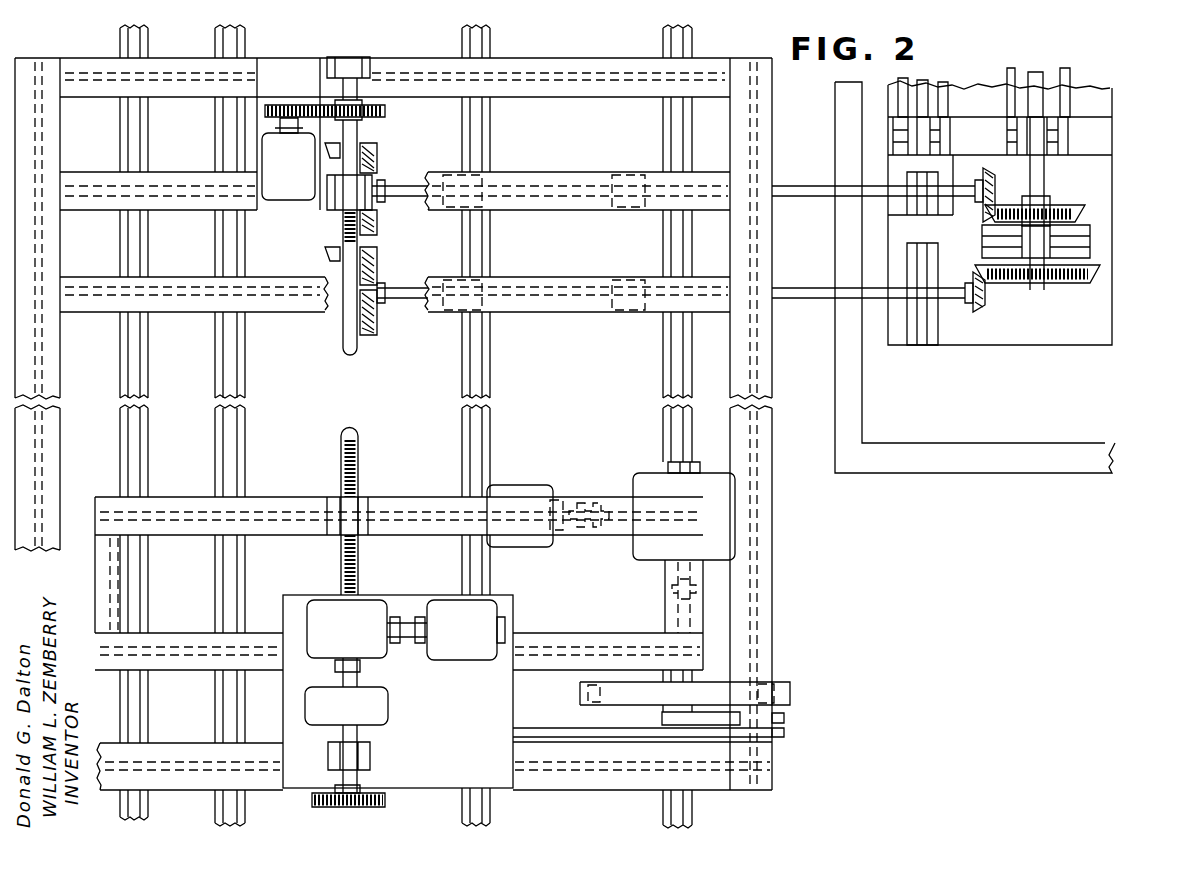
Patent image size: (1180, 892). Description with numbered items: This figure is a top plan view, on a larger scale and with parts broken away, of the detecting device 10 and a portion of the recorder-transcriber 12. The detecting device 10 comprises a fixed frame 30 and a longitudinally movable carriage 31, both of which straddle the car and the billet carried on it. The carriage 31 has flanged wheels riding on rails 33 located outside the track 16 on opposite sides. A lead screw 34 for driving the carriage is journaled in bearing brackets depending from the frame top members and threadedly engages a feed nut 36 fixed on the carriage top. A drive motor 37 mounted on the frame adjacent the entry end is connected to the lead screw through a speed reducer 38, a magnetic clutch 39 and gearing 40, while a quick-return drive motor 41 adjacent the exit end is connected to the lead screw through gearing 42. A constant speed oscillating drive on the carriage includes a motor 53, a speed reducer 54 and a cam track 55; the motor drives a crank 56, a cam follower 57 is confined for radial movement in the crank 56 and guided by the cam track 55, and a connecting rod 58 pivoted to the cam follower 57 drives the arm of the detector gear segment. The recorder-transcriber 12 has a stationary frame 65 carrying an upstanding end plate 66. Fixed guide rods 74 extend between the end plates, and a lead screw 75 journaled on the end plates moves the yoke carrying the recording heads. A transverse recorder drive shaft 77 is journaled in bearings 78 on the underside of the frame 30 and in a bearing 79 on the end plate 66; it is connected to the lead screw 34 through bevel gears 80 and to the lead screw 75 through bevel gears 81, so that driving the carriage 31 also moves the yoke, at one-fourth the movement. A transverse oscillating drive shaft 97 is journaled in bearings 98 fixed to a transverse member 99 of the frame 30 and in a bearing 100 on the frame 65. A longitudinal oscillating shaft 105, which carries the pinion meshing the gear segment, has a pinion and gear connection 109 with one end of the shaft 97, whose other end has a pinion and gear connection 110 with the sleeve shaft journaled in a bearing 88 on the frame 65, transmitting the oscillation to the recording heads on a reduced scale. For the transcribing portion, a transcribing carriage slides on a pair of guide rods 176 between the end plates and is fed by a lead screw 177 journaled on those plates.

The detecting device 10 is at (802, 635).
The recorder-transcriber 12 is at (979, 361).
The track 16 is at (232, 440).
The fixed frame 30 is at (60, 378).
The carriage 31 is at (272, 497).
The rails 33 is at (133, 805).
The lead screw 34 is at (343, 238).
The feed nut 36 is at (358, 500).
The drive motor 37 is at (446, 630).
The speed reducer 38 is at (347, 629).
The magnetic clutch 39 is at (346, 725).
The gearing 40 is at (383, 797).
The quick-return drive motor 41 is at (288, 159).
The gearing 42 is at (385, 108).
The motor 53 is at (530, 487).
The speed reducer 54 is at (650, 482).
The cam track 55 is at (605, 705).
The crank 56 is at (790, 718).
The cam follower 57 is at (795, 690).
The connecting rod 58 is at (543, 730).
The stationary frame 65 is at (1062, 332).
The end plate 66 is at (1105, 143).
The guide rods 74 is at (1013, 70).
The lead screw 75 is at (1044, 185).
The recorder drive shaft 77 is at (796, 184).
The bearings 78 is at (445, 180).
The bearing 79 is at (915, 202).
The bevel gears 80 is at (377, 224).
The bevel gears 81 is at (1075, 210).
The bearing 88 is at (1045, 235).
The oscillating drive shaft 97 is at (817, 300).
The bearings 98 is at (445, 312).
The transverse member 99 is at (554, 318).
The bearing 100 is at (935, 290).
The longitudinal oscillating shaft 105 is at (358, 440).
The pinion and gear connection 109 is at (377, 272).
The pinion and gear connection 110 is at (988, 302).
The guide rods 176 is at (945, 100).
The lead screw 177 is at (923, 84).